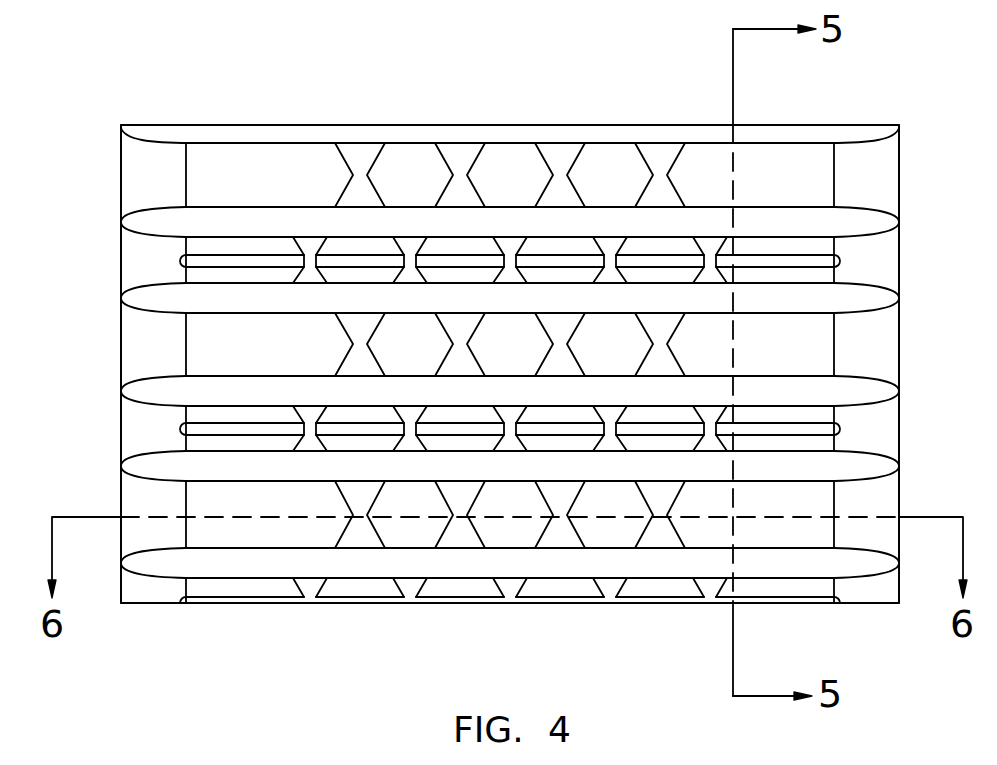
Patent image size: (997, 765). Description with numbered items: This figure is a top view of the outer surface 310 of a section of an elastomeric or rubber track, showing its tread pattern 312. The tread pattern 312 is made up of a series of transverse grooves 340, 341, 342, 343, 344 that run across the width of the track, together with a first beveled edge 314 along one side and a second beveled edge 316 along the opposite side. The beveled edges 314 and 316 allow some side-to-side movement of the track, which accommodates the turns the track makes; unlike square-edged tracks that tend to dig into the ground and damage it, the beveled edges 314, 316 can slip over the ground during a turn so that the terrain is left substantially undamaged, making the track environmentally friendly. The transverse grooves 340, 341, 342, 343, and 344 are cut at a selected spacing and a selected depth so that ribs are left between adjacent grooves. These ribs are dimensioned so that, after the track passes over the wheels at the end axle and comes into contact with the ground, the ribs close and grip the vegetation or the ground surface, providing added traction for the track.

The outer surface 310 is at (418, 155).
The tread pattern 312 is at (516, 155).
The first beveled edge 314 is at (150, 157).
The second beveled edge 316 is at (885, 163).
The transverse groove 340 is at (899, 222).
The transverse groove 341 is at (899, 298).
The transverse groove 342 is at (899, 391).
The transverse groove 343 is at (899, 466).
The transverse groove 344 is at (899, 563).